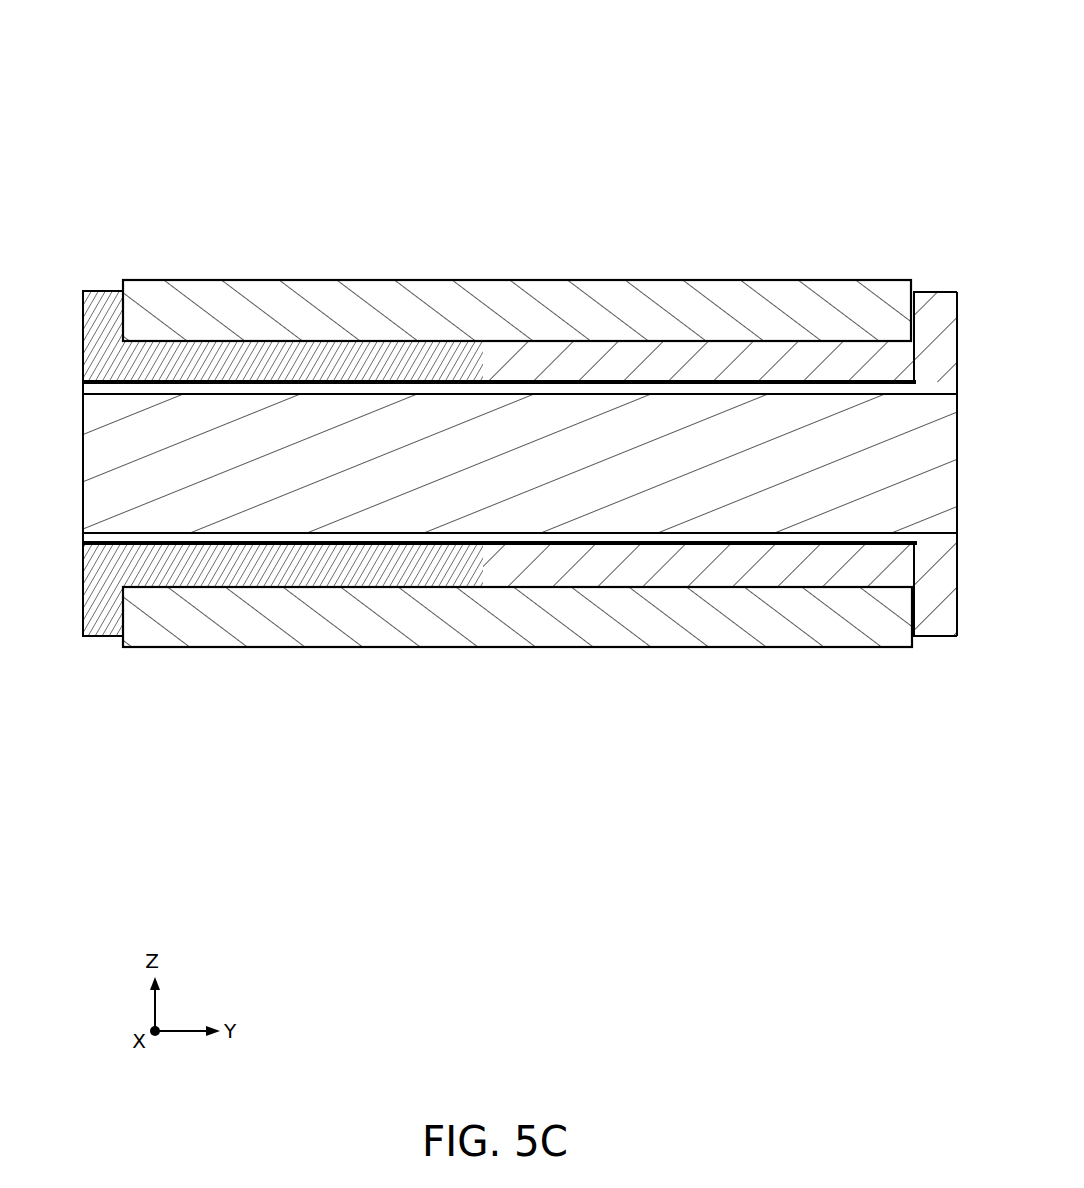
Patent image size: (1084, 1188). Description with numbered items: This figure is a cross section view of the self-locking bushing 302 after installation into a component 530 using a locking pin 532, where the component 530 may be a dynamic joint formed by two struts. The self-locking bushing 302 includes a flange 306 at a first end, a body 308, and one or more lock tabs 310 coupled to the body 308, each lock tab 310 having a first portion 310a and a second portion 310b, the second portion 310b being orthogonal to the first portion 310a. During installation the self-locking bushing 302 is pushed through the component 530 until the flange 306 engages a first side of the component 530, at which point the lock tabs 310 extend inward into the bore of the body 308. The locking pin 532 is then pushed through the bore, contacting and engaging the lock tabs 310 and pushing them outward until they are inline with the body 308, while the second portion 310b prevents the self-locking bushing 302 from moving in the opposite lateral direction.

The self-locking bushing 302 is at (141, 101).
The flange 306 is at (929, 296).
The body 308 is at (672, 362).
The lock tab 310 is at (262, 433).
The first portion 310a is at (308, 343).
The second portion 310b is at (100, 298).
The component 530 is at (500, 292).
The locking pin 532 is at (588, 424).